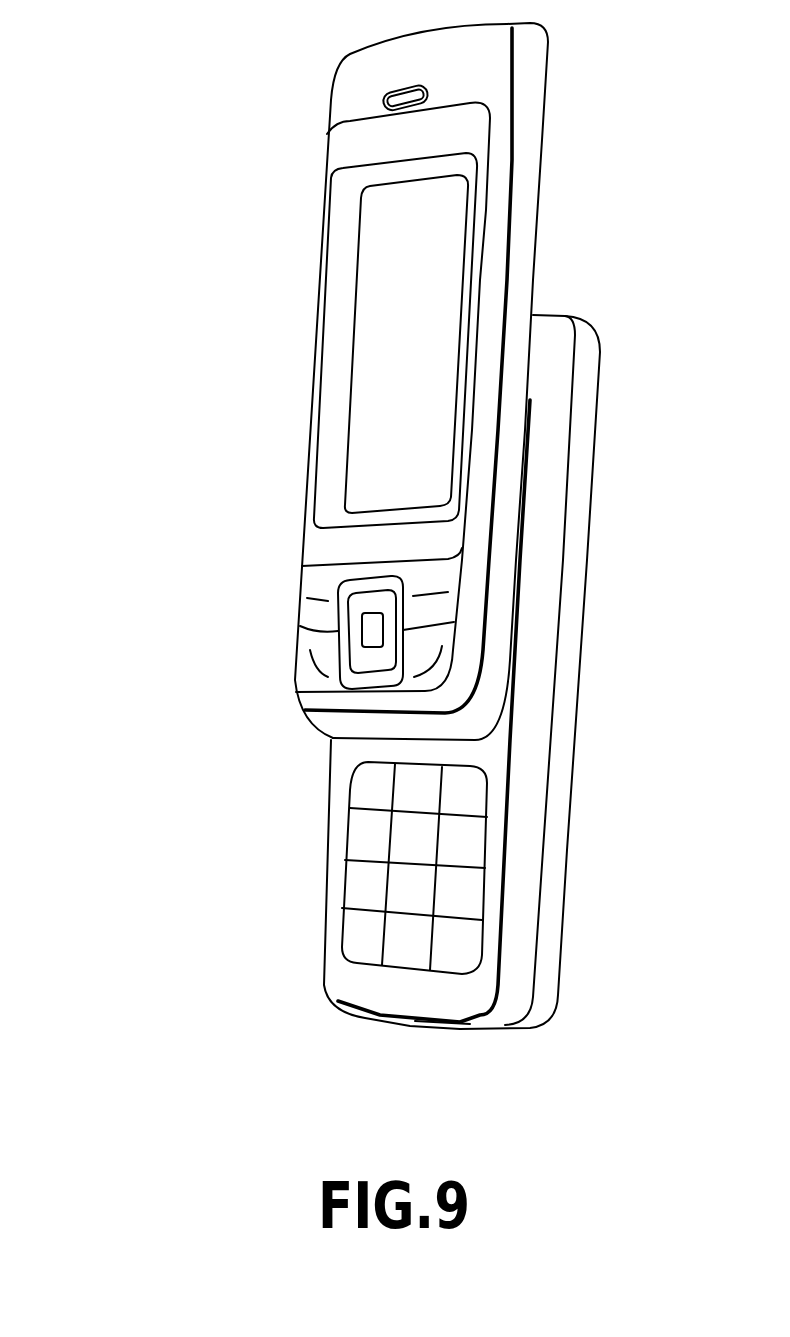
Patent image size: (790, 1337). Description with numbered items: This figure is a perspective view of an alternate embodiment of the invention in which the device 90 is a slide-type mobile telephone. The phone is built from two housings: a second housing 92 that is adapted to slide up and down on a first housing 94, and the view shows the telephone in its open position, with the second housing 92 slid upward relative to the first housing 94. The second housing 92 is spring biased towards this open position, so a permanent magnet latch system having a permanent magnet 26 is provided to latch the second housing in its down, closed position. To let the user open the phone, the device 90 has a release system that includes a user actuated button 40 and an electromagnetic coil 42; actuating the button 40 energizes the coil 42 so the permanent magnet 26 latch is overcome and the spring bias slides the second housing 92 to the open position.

The device 90 is at (187, 160).
The second housing 92 is at (547, 90).
The user actuated button 40 is at (580, 391).
The first housing 94 is at (563, 906).
The permanent magnet 26 is at (392, 1028).
The electromagnetic coil 42 is at (433, 1032).